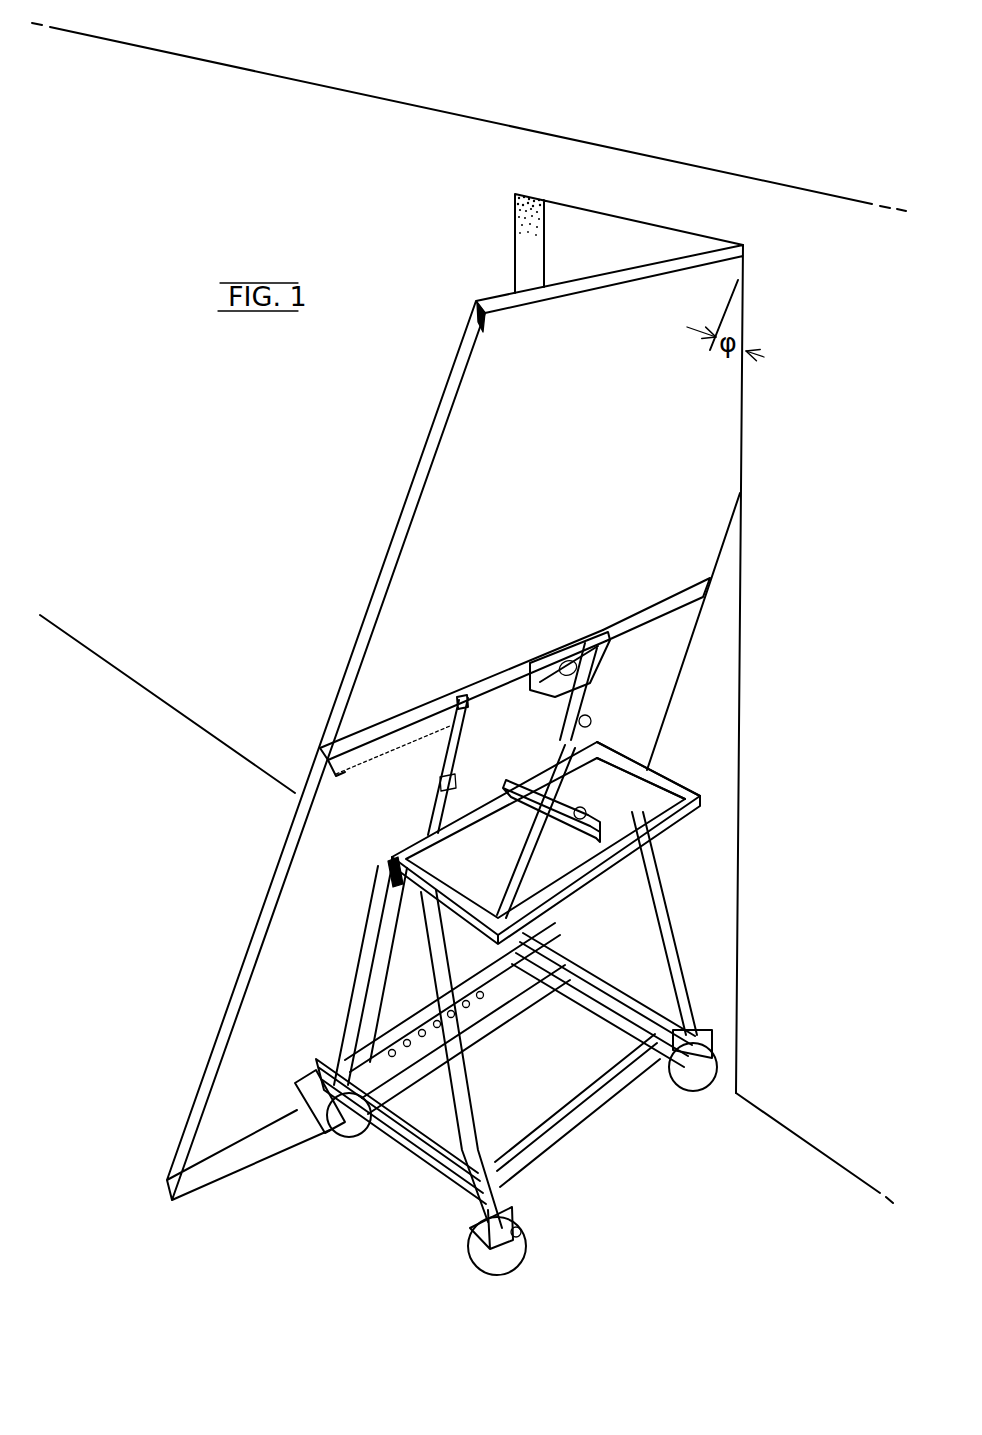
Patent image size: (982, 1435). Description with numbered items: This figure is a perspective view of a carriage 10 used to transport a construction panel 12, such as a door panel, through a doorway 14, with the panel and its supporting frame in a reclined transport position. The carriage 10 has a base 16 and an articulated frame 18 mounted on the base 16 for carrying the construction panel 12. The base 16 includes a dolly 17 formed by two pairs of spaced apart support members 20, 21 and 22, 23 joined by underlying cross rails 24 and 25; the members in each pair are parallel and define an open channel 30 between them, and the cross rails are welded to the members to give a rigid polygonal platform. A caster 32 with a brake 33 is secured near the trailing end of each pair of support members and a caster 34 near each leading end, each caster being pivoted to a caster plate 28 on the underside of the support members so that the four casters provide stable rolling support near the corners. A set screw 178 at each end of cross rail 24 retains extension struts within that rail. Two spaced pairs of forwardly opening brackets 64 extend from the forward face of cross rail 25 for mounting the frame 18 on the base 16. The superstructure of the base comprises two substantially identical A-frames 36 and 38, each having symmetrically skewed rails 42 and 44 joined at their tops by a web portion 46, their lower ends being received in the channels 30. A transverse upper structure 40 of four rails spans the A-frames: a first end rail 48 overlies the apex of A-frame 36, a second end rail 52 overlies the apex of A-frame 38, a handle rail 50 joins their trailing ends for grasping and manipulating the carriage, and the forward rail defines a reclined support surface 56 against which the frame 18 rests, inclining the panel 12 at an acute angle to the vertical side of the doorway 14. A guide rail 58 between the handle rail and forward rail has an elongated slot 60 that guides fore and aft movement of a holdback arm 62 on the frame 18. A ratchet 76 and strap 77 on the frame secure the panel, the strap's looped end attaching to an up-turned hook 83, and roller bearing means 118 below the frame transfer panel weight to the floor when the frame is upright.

The carriage 10 is at (650, 1199).
The construction panel 12 is at (455, 722).
The doorway 14 is at (572, 251).
The base 16 is at (328, 1027).
The dolly 17 is at (390, 1166).
The articulated frame 18 is at (415, 808).
The support member 20 is at (425, 1176).
The support member 21 is at (427, 1142).
The support member 22 is at (622, 1010).
The support member 23 is at (680, 997).
The cross rail 24 is at (577, 1117).
The cross rail 25 is at (498, 1019).
The caster plate 28 is at (721, 1047).
The open channel 30 is at (388, 1122).
The caster 32 is at (713, 1065).
The brake 33 is at (688, 1072).
The caster 34 is at (338, 1130).
The A-frame 36 is at (360, 967).
The A-frame 38 is at (677, 938).
The transverse upper structure 40 is at (676, 826).
The skewed rail 42 is at (640, 760).
The skewed rail 44 is at (670, 968).
The web portion 46 is at (636, 766).
The first end rail 48 is at (396, 965).
The handle rail 50 is at (598, 877).
The second end rail 52 is at (664, 779).
The reclined support surface 56 is at (392, 855).
The guide rail 58 is at (548, 843).
The elongated slot 60 is at (655, 863).
The holdback arm 62 is at (543, 796).
The forwardly opening brackets 64 is at (496, 994).
The ratchet 76 is at (567, 660).
The strap 77 is at (657, 638).
The up-turned hook 83 is at (461, 696).
The roller bearing means 118 is at (474, 1003).
The set screw 178 is at (453, 1198).